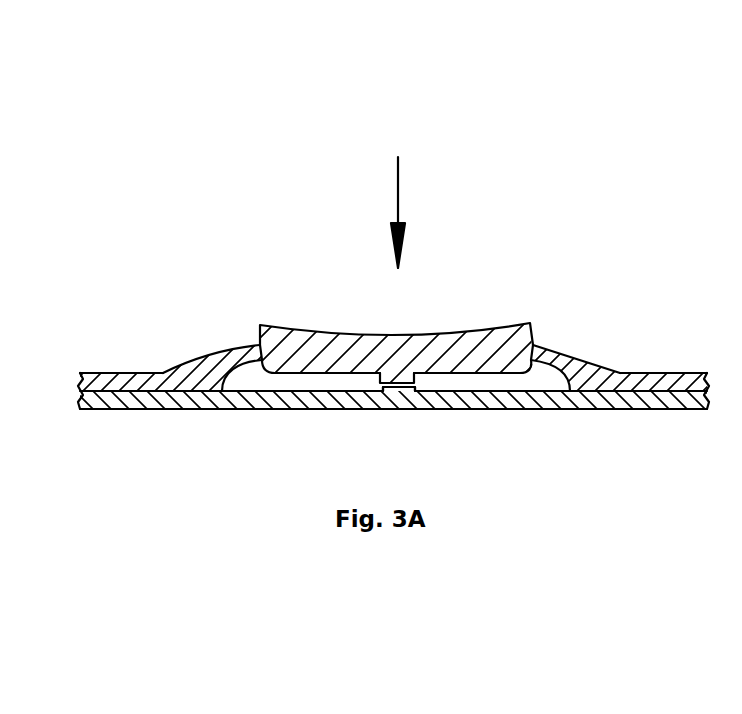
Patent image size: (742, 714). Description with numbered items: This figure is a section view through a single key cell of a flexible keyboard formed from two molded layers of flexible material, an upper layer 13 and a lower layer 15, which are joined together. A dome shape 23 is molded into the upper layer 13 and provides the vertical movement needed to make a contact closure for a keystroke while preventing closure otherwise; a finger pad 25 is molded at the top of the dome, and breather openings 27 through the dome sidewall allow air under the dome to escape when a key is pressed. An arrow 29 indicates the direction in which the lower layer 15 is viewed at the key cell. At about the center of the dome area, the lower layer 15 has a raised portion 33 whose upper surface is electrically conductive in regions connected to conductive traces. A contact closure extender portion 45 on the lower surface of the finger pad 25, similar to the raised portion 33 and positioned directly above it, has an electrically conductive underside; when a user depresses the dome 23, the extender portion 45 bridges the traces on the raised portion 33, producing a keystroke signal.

The upper layer 13 is at (123, 372).
The lower layer 15 is at (172, 410).
The dome shape 23 is at (213, 355).
The finger pad 25 is at (290, 330).
The breather openings 27 is at (593, 358).
The arrow 29 is at (398, 190).
The raised portion 33 is at (398, 386).
The contact closure extender portion 45 is at (407, 380).